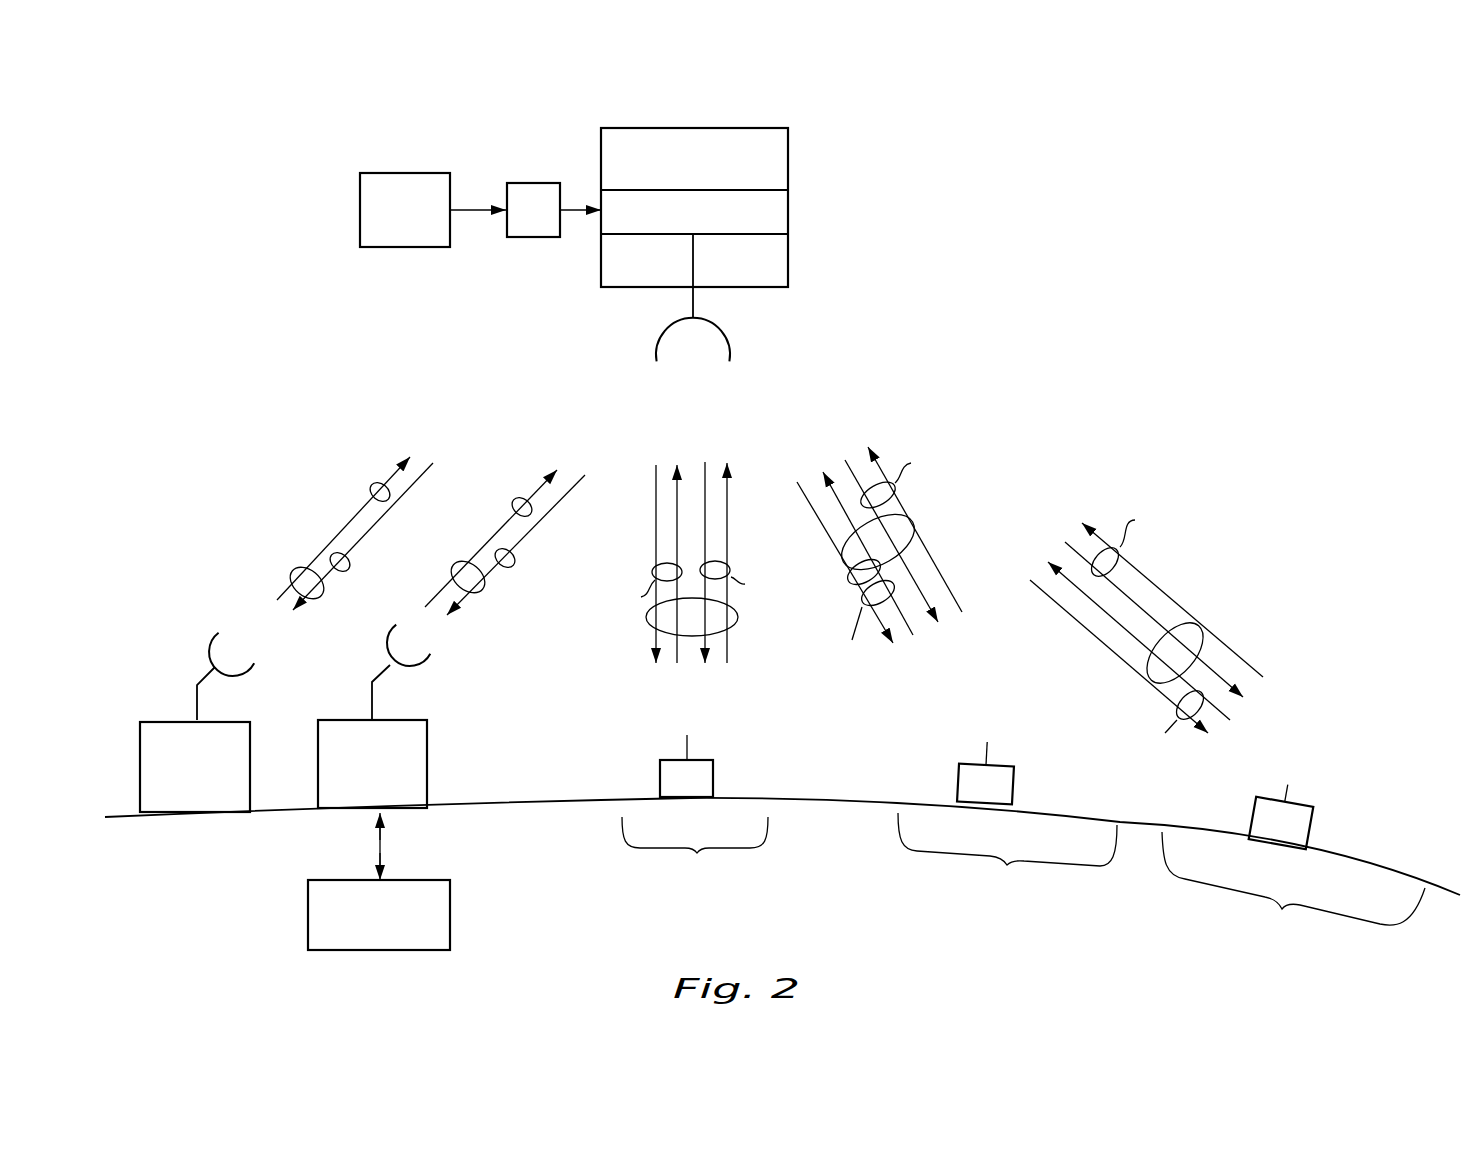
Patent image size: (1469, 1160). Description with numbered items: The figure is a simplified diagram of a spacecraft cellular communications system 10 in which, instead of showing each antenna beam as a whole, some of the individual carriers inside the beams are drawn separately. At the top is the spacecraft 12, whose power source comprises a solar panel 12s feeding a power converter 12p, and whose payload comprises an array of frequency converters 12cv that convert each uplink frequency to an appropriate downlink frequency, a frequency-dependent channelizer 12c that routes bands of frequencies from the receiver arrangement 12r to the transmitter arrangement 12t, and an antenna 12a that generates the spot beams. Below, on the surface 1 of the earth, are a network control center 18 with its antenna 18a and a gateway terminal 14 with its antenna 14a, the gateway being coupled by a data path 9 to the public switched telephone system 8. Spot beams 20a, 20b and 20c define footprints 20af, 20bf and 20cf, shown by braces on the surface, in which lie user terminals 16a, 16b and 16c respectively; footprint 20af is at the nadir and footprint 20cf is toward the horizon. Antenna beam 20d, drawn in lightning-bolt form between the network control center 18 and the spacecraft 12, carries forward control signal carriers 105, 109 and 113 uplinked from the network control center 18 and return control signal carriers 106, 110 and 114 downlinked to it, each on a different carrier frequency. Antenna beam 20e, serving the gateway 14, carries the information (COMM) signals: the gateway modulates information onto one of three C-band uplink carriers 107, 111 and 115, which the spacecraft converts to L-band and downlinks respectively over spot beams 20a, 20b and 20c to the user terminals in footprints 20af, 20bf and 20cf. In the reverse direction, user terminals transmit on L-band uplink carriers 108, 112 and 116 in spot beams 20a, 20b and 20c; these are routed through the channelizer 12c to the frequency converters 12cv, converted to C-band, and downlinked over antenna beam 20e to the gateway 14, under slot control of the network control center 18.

The surface of the earth 1 is at (547, 800).
The public switched telephone system 8 is at (397, 950).
The data path 9 is at (381, 847).
The spacecraft cellular communications system 10 is at (497, 333).
The spacecraft 12 is at (537, 155).
The solar panel 12s is at (408, 173).
The power converter 12p is at (509, 183).
The frequency converters 12cv is at (788, 167).
The channelizer 12c is at (788, 212).
The transmitter arrangement 12t is at (601, 267).
The receiver arrangement 12r is at (788, 262).
The antenna 12a is at (727, 346).
The gateway terminal 14 is at (341, 720).
The gateway antenna 14a is at (383, 645).
The user terminal 16a is at (714, 780).
The user terminal 16b is at (1014, 792).
The user terminal 16c is at (1310, 836).
The network control center 18 is at (163, 721).
The network control center antenna 18a is at (208, 645).
The spot beam 20a is at (693, 562).
The spot beam 20b is at (874, 556).
The spot beam 20c is at (1143, 638).
The antenna beam 20d is at (378, 484).
The antenna beam 20e is at (517, 499).
The footprint 20af is at (695, 852).
The footprint 20bf is at (1007, 858).
The footprint 20cf is at (1293, 892).
The forward control signal carrier 105 is at (656, 487).
The return control signal carrier 106 is at (677, 528).
The information signal carrier 107 is at (705, 516).
The uplink information signal carrier 108 is at (727, 557).
The forward control signal carrier 109 is at (797, 482).
The return control signal carrier 110 is at (857, 587).
The information signal carrier 111 is at (912, 567).
The uplink information signal carrier 112 is at (958, 595).
The forward control signal carrier 113 is at (1120, 658).
The return control signal carrier 114 is at (1092, 605).
The information signal carrier 115 is at (1155, 617).
The uplink information signal carrier 116 is at (1145, 578).